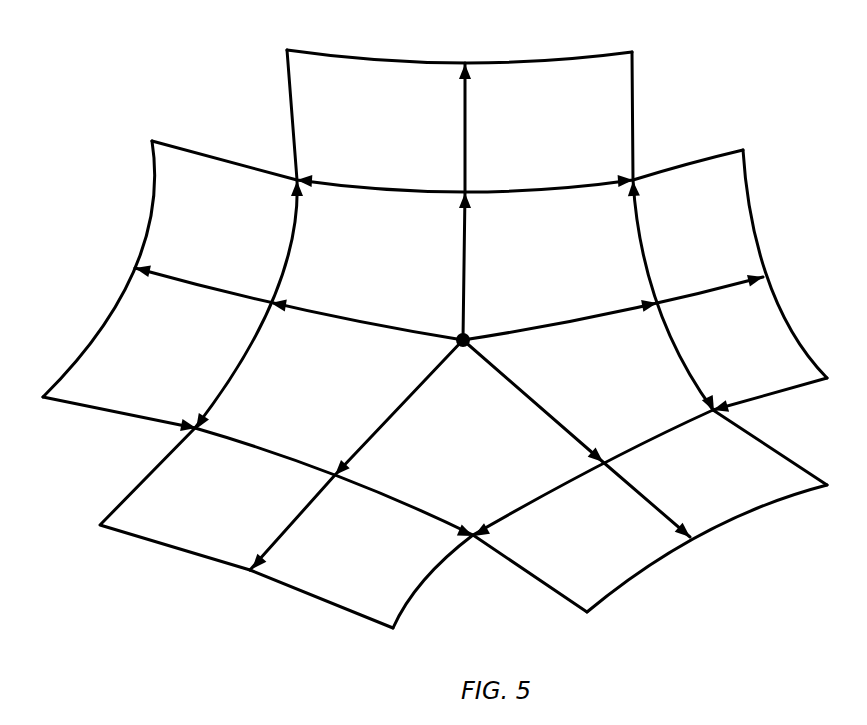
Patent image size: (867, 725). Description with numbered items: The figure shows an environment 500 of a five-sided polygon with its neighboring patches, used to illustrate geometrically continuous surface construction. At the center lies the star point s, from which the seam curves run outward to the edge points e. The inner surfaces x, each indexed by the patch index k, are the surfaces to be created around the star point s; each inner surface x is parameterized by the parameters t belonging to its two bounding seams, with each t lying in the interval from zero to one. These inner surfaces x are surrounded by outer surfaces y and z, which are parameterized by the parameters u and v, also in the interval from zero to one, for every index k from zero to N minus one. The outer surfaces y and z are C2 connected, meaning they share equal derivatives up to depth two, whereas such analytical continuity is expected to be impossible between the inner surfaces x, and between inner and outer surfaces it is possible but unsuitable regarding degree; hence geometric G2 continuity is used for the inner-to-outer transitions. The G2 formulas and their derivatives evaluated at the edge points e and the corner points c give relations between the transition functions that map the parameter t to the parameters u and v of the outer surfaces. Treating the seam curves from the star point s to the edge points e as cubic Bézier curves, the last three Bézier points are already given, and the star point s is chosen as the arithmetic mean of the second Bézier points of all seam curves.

The environment of a 5-gon 500 is at (128, 62).
The star point s is at (471, 331).
The edge point e is at (470, 455).
The corner point c is at (490, 581).
The inner surface x is at (435, 258).
The outer surface y is at (538, 503).
The outer surface z is at (435, 504).
The parameter t is at (517, 378).
The parameter u is at (454, 487).
The parameter v is at (459, 482).
The patch index k is at (469, 449).